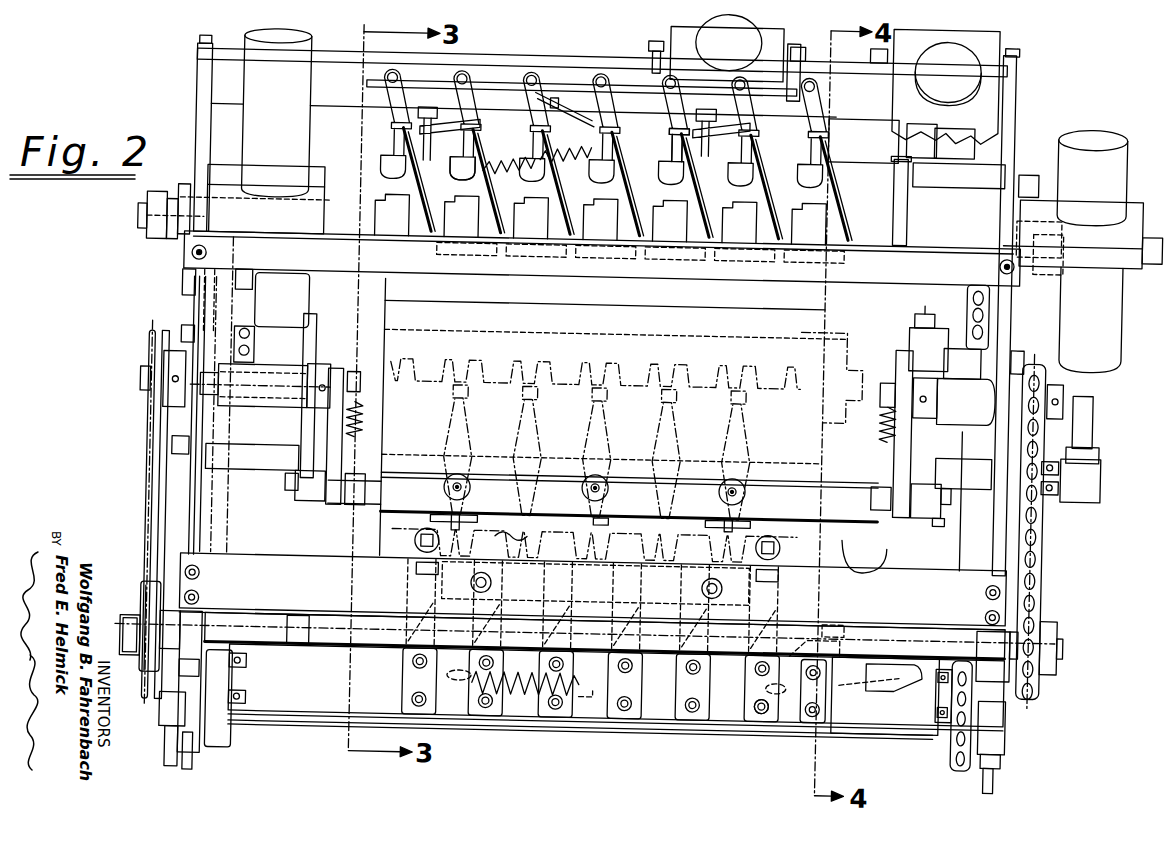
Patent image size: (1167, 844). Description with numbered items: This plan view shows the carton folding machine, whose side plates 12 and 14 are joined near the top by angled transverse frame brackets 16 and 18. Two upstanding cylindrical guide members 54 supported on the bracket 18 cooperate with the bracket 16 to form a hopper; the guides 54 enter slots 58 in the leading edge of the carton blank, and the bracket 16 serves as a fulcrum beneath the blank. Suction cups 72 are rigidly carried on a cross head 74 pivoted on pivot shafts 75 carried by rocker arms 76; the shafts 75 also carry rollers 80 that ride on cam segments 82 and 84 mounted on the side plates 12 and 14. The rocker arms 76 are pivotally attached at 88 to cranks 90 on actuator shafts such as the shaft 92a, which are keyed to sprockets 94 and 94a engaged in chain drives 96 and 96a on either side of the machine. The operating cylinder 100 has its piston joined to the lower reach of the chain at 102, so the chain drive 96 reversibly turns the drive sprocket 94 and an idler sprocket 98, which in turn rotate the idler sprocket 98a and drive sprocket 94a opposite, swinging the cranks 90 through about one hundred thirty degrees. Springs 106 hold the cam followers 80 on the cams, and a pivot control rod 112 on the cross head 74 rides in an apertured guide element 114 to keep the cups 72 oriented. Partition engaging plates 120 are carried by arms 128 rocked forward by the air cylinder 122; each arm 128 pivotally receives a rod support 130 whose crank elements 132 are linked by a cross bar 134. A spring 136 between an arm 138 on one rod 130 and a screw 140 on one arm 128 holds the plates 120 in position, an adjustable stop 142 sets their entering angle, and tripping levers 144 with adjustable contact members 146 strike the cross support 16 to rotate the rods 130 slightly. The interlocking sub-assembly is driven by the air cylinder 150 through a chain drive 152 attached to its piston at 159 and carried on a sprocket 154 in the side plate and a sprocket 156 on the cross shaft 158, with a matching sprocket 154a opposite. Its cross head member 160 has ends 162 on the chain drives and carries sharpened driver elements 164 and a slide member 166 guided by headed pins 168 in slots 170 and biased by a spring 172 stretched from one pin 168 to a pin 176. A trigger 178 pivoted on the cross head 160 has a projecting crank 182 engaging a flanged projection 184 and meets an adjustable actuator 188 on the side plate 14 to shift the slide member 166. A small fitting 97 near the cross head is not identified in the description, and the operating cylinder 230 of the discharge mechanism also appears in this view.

The side plate 12 is at (197, 101).
The side plate 14 is at (1010, 118).
The transverse frame bracket 16 is at (182, 271).
The transverse frame bracket 18 is at (1005, 598).
The cylindrical guide members 54 is at (420, 536).
The slots 58 is at (818, 548).
The suction cups 72 is at (472, 491).
The cross head 74 is at (393, 484).
The pivot shafts 75 is at (289, 497).
The rocker arms 76 is at (345, 416).
The rollers 80 is at (312, 507).
The cam segment 82 is at (941, 519).
The cam segment 84 is at (307, 436).
The pivot connection 88 is at (880, 389).
The cranks 90 is at (320, 380).
The actuator shaft 92a is at (308, 362).
The drive sprocket 94 is at (1036, 395).
The drive sprocket 94a is at (157, 416).
The chain drive 96 is at (1045, 365).
The chain drive 96a is at (150, 525).
The clip 97 is at (660, 522).
The idler sprocket 98 is at (1063, 645).
The idler sprocket 98a is at (150, 587).
The operating cylinder 100 is at (1100, 184).
The piston-to-chain connection 102 is at (1090, 480).
The springs 106 is at (362, 428).
The pivot control rod 112 is at (889, 177).
The apertured guide element 114 is at (895, 165).
The partition engaging plates 120 is at (537, 250).
The air cylinder 122 is at (728, 55).
The arms 128 is at (541, 215).
The rod support 130 is at (666, 135).
The crank elements 132 is at (450, 80).
The cross bar 134 is at (480, 84).
The spring 136 is at (512, 165).
The arm 138 is at (590, 152).
The screw 140 is at (458, 186).
The adjustable stop 142 is at (580, 122).
The tripping levers 144 is at (412, 118).
The adjustable contact members 146 is at (416, 134).
The air cylinder 150 is at (312, 26).
The chain drive 152 is at (232, 548).
The sprocket 154 is at (226, 309).
The sprocket 154a is at (978, 328).
The sprocket 156 is at (962, 712).
The cross shaft 158 is at (882, 732).
The chain-to-piston attachment 159 is at (266, 338).
The cross head member 160 is at (326, 700).
The ends 162 is at (265, 690).
The sharpened driver elements 164 is at (618, 696).
The slide member 166 is at (727, 702).
The headed pins 168 is at (465, 683).
The slots 170 is at (766, 711).
The spring 172 is at (532, 705).
The pin 176 is at (594, 697).
The trigger 178 is at (905, 655).
The projecting crank 182 is at (834, 632).
The flanged projection 184 is at (838, 632).
The adjustable actuator 188 is at (929, 332).
The operating cylinder 230 is at (954, 66).